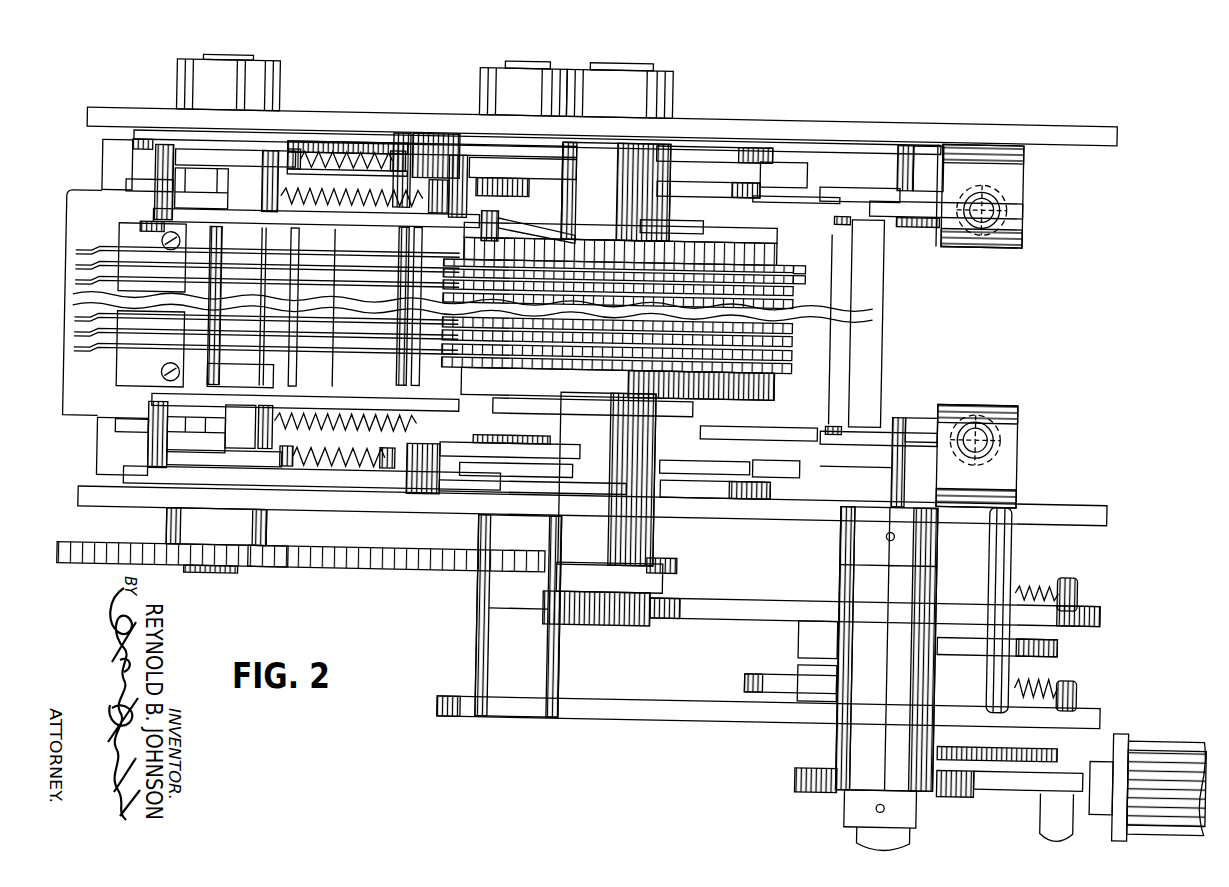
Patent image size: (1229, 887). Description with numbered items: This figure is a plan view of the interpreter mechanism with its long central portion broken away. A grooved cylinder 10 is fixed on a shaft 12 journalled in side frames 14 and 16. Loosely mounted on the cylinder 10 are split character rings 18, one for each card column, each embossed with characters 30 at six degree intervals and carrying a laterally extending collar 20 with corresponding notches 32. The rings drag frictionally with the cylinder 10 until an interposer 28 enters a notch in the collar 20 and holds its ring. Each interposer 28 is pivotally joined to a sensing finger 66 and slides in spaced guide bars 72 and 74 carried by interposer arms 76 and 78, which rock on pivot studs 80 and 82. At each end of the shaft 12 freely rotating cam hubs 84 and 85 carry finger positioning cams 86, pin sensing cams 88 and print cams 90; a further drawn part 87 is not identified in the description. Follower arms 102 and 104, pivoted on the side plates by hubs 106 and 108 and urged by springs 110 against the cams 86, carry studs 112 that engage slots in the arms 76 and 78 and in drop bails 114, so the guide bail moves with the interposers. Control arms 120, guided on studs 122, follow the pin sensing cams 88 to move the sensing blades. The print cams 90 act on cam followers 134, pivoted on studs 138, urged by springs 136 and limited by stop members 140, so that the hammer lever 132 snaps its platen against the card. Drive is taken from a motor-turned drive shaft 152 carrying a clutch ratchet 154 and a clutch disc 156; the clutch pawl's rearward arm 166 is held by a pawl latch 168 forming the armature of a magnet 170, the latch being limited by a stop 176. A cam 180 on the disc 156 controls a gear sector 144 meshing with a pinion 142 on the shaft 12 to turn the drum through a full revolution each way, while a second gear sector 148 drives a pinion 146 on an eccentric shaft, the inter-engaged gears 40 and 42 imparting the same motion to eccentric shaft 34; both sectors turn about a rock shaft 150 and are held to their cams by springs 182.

The grooved cylinder 10 is at (715, 245).
The shaft 12 is at (614, 625).
The side frame 14 is at (850, 117).
The side frame 16 is at (798, 516).
The split character rings 18 is at (790, 268).
The collar 20 is at (776, 262).
The interposer 28 is at (318, 352).
The characters 30 is at (588, 272).
The notches 32 is at (536, 264).
The eccentric shaft 34 is at (205, 581).
The gear 40 is at (262, 573).
The gear 42 is at (438, 574).
The sensing finger 66 is at (88, 262).
The guide bar 72 is at (263, 236).
The guide bar 74 is at (332, 235).
The interposer arm 76 is at (236, 222).
The interposer arm 78 is at (238, 403).
The pivot stud 80 is at (472, 200).
The pivot stud 82 is at (468, 440).
The cam hub 84 is at (672, 226).
The cam hub 85 is at (690, 412).
The finger positioning cam 86 is at (686, 150).
The slide bar 87 is at (705, 490).
The pin sensing cam 88 is at (690, 187).
The print cam 90 is at (612, 195).
The follower arm 102 is at (357, 147).
The follower arm 104 is at (316, 488).
The pivot hub 106 is at (432, 140).
The pivot hub 108 is at (420, 470).
The spring 110 is at (322, 150).
The stud 112 is at (148, 178).
The drop bail 114 is at (218, 193).
The control arm 120 is at (783, 175).
The guide stud 122 is at (832, 202).
The hammer lever 132 is at (838, 342).
The cam follower 134 is at (890, 215).
The spring 136 is at (992, 220).
The pivot stud 138 is at (840, 220).
The stop member 140 is at (925, 225).
The pinion 142 is at (588, 625).
The gear sector 144 is at (712, 617).
The pinion 146 is at (448, 720).
The gear sector 148 is at (640, 720).
The rock shaft 150 is at (845, 582).
The drive shaft 152 is at (858, 833).
The clutch ratchet 154 is at (952, 790).
The clutch disc 156 is at (988, 750).
The rearwardly extending arm 166 is at (1050, 786).
The pawl latch 168 is at (1100, 752).
The magnet 170 is at (1150, 731).
The stop 176 is at (1064, 640).
The cam 180 is at (748, 680).
The spring 182 is at (1032, 578).